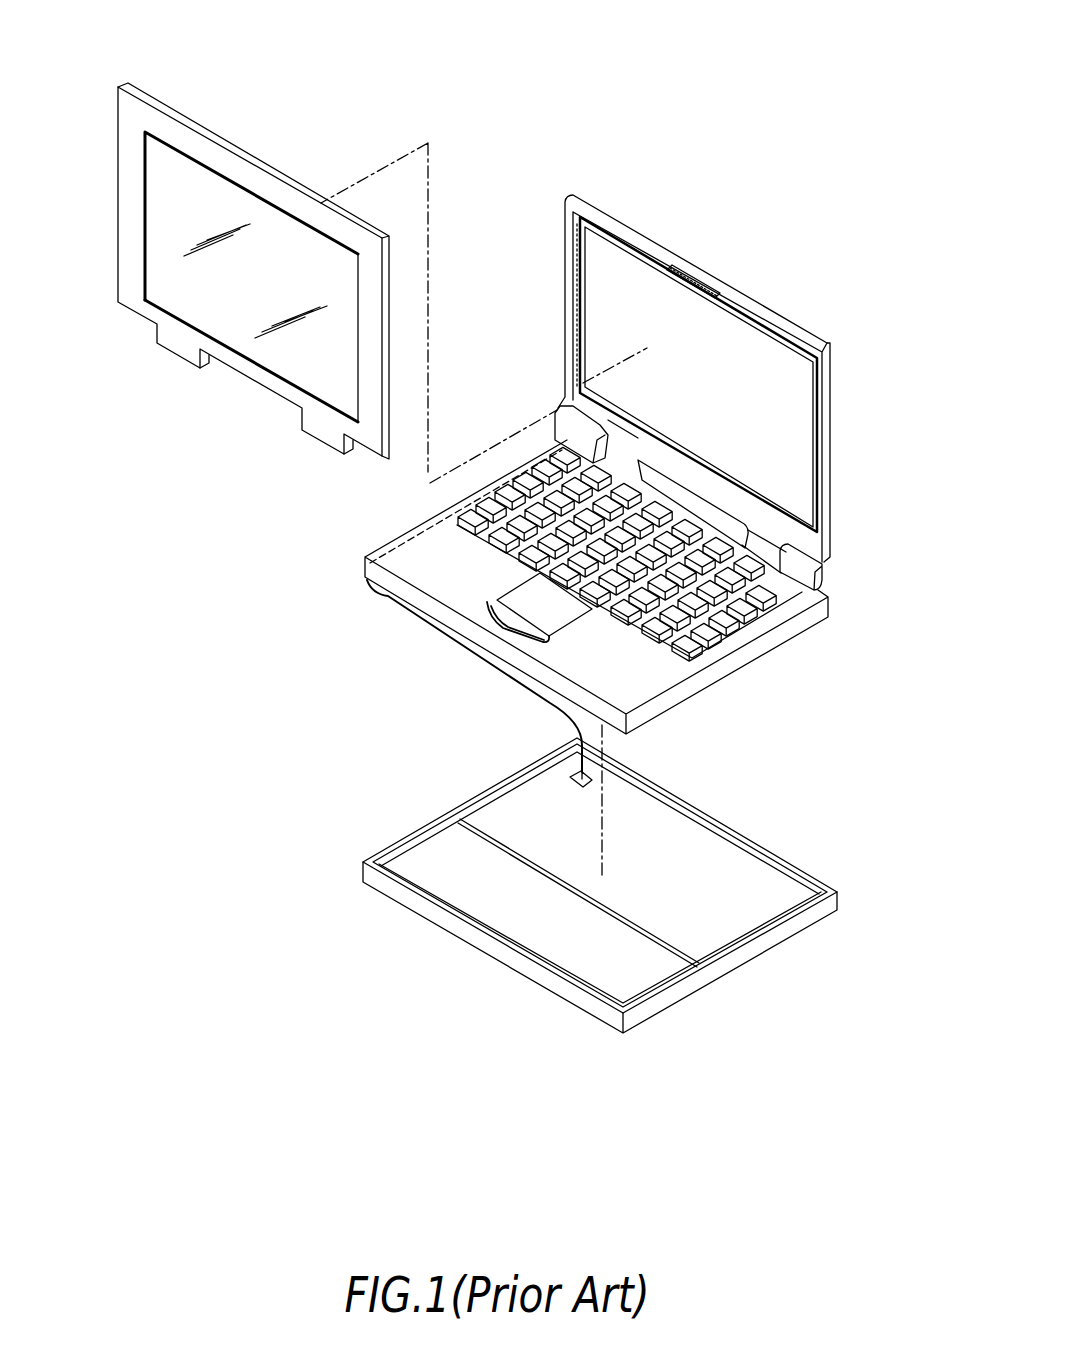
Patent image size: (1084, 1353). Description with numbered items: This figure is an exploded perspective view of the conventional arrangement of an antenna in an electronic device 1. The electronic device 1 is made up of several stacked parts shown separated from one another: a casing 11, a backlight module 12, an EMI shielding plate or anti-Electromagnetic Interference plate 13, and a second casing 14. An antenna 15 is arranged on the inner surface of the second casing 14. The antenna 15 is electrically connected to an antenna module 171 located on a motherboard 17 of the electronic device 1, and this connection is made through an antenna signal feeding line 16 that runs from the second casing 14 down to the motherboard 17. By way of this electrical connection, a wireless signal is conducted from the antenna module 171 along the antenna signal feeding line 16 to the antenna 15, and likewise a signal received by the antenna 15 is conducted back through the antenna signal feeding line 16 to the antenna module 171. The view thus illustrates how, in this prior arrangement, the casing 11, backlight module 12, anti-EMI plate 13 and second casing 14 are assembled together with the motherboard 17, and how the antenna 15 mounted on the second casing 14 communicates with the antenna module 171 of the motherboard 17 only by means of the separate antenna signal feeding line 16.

The electronic device 1 is at (696, 90).
The casing 11 is at (240, 157).
The backlight module 12 is at (270, 355).
The EMI shielding plate 13 is at (813, 450).
The second casing 14 is at (826, 402).
The antenna 15 is at (710, 292).
The antenna signal feeding line 16 is at (430, 633).
The motherboard 17 is at (762, 870).
The antenna module 171 is at (570, 771).